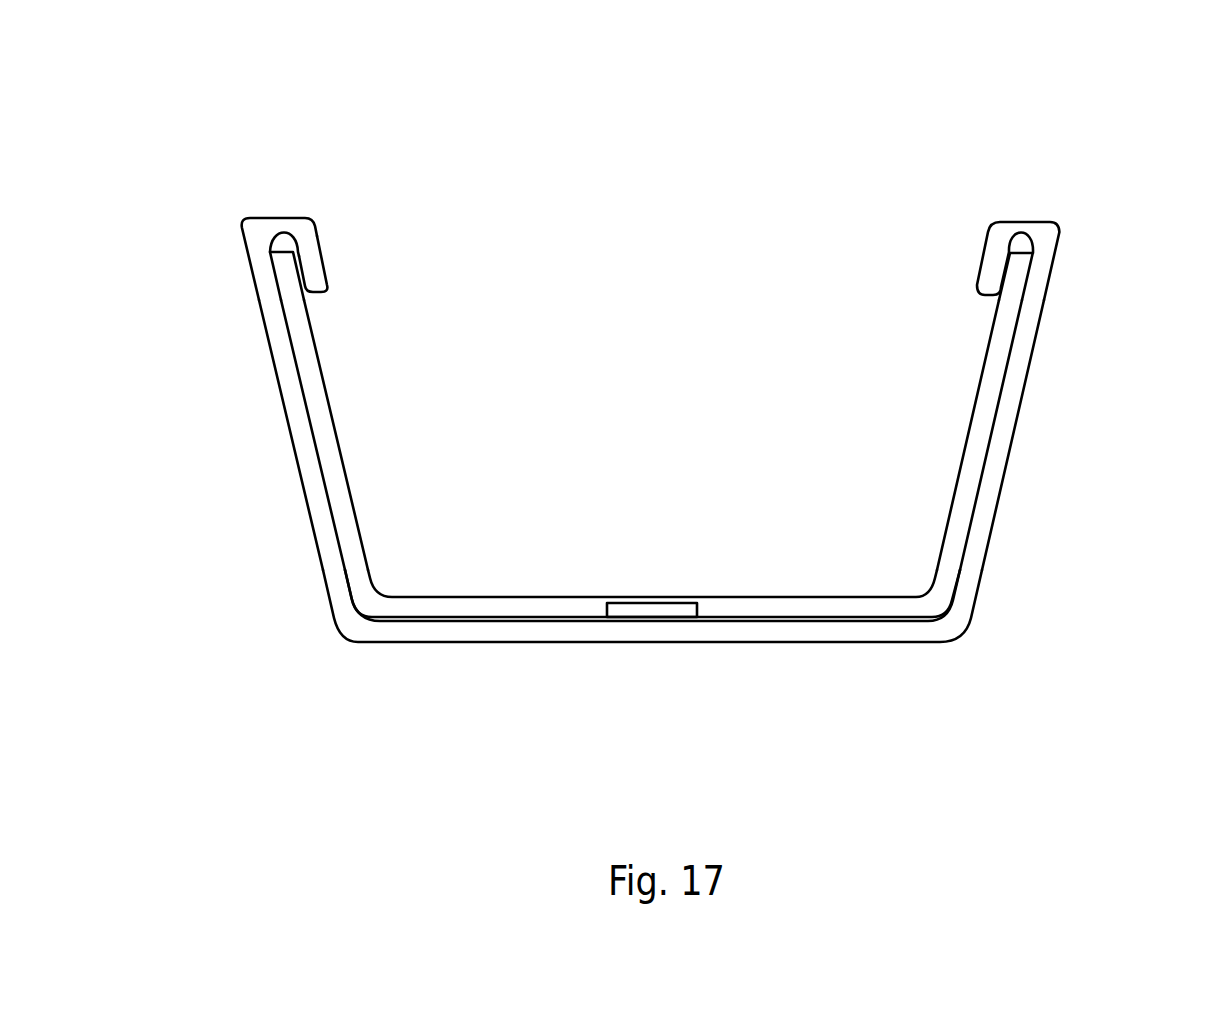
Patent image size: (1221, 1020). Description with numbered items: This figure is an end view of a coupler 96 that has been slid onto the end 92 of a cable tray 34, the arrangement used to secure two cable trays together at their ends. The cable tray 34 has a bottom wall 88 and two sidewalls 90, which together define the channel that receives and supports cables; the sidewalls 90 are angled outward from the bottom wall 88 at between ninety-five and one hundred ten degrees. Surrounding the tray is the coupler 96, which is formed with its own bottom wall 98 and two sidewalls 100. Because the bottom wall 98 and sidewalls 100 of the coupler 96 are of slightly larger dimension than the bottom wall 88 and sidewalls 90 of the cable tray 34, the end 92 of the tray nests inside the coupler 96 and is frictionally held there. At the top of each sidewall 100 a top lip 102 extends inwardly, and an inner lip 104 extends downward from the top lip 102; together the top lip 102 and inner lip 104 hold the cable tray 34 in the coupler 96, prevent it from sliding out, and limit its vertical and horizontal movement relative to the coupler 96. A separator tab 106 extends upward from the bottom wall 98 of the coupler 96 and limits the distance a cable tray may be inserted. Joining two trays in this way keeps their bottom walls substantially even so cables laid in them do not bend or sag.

The cable tray 34 is at (651, 447).
The bottom wall 88 is at (733, 607).
The sidewalls 90 is at (317, 405).
The end 92 is at (652, 626).
The coupler 96 is at (1047, 282).
The bottom wall 98 is at (643, 432).
The sidewalls 100 is at (300, 427).
The top lip 102 is at (349, 208).
The inner lip 104 is at (323, 252).
The separator tab 106 is at (652, 607).